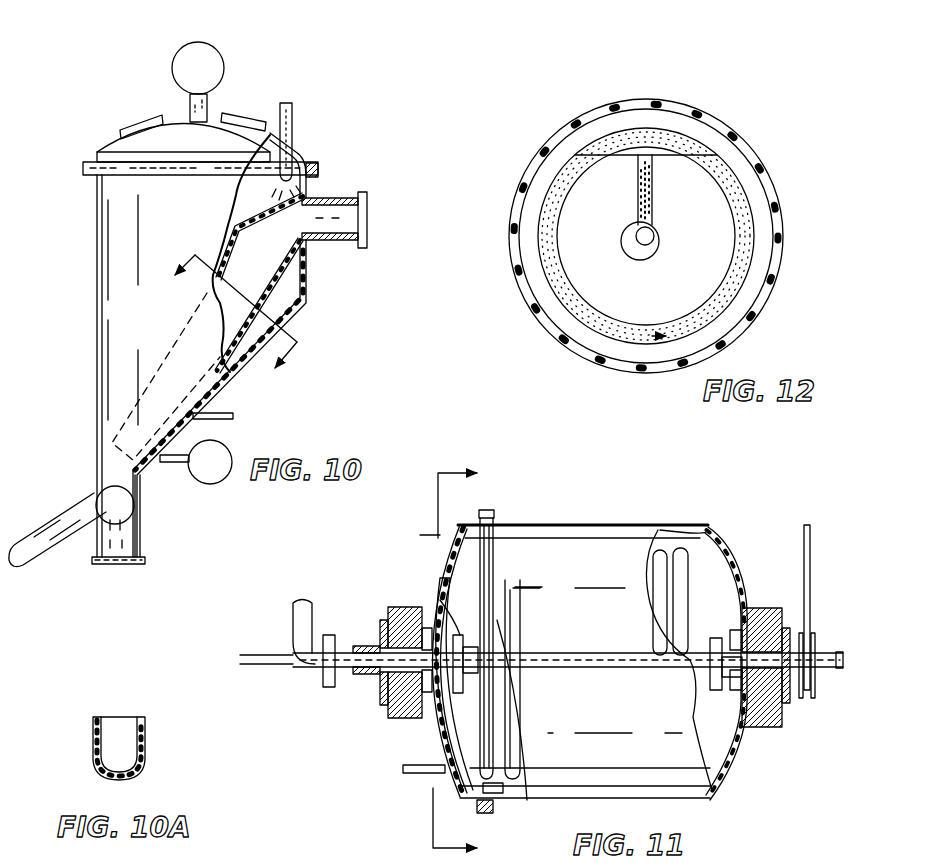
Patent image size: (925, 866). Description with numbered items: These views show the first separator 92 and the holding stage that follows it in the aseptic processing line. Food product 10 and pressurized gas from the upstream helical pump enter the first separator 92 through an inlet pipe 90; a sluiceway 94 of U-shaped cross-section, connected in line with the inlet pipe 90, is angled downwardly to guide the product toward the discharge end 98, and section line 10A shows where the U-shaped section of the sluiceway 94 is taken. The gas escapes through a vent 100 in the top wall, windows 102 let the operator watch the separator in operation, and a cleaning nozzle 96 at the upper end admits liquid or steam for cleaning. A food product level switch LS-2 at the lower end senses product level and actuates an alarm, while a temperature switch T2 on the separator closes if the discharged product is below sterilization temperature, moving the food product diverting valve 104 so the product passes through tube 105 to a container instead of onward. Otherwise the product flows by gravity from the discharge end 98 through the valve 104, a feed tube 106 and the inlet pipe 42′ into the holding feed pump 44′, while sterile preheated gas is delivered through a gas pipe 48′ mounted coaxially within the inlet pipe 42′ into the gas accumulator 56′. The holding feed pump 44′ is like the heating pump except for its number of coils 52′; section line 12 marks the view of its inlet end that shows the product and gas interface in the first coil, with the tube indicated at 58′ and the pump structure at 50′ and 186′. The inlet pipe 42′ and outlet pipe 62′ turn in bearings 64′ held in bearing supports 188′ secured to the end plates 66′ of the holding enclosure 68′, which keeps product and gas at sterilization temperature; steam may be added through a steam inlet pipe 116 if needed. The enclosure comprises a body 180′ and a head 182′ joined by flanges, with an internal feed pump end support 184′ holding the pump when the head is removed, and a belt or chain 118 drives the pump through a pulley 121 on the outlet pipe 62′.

In FIG. 10, the first separator 92 is at (76, 230).
In FIG. 10, the vent 100 is at (222, 60).
In FIG. 10, the windows 102 is at (140, 118).
In FIG. 10, the cleaning nozzle 96 is at (293, 127).
In FIG. 10, the inlet pipe 90 is at (336, 198).
In FIG. 10, the sluiceway 94 is at (170, 325).
In FIG. 10A, the sluiceway 94 is at (146, 742).
In FIG. 10, the section line 10A— 10A is at (222, 327).
In FIG. 10, the food product level switch LS-2 is at (239, 417).
In FIG. 10, the temperature switch T2 is at (196, 462).
In FIG. 10, the discharge end 98 is at (97, 480).
In FIG. 10, the food product diverting valve 104 is at (135, 505).
In FIG. 10, the tube 105 is at (62, 565).
In FIG. 12, the food product 10 is at (552, 340).
In FIG. 12, the holding enclosure 68′ is at (533, 162).
In FIG. 11, the holding enclosure 68′ is at (670, 524).
In FIG. 12, the drum 50′ is at (616, 138).
In FIG. 12, the coils 52′ is at (538, 245).
In FIG. 11, the coils 52′ is at (658, 603).
In FIG. 12, the steam tube 58′ is at (619, 190).
In FIG. 12, the gas pipe 48′ is at (658, 250).
In FIG. 11, the gas pipe 48′ is at (272, 660).
In FIG. 12, the gas accumulator 56′ is at (627, 256).
In FIG. 11, the gas accumulator 56′ is at (476, 670).
In FIG. 11, the section line 12— 12 is at (470, 662).
In FIG. 11, the body 180′ is at (595, 572).
In FIG. 11, the end plates 66′ is at (448, 796).
In FIG. 11, the internal feed pump end support 184′ is at (436, 588).
In FIG. 11, the head 182′ is at (452, 540).
In FIG. 11, the holding feed pump 44′ is at (692, 533).
In FIG. 11, the outlet pipe 62′ is at (734, 648).
In FIG. 11, the steam pipe 186′ is at (432, 645).
In FIG. 11, the feed tube 106 is at (293, 612).
In FIG. 11, the inlet pipe 42′ is at (385, 673).
In FIG. 11, the bearing supports 188′ is at (370, 611).
In FIG. 11, the bearings 64′ is at (420, 630).
In FIG. 11, the steam inlet pipe 116 is at (426, 776).
In FIG. 11, the belt or chain 118 is at (811, 566).
In FIG. 11, the pulley 121 is at (814, 652).